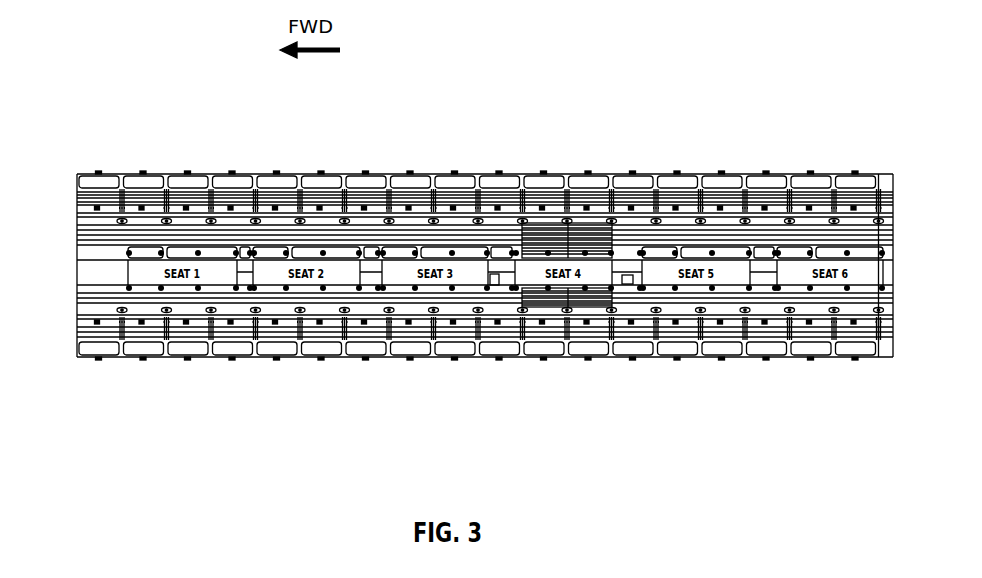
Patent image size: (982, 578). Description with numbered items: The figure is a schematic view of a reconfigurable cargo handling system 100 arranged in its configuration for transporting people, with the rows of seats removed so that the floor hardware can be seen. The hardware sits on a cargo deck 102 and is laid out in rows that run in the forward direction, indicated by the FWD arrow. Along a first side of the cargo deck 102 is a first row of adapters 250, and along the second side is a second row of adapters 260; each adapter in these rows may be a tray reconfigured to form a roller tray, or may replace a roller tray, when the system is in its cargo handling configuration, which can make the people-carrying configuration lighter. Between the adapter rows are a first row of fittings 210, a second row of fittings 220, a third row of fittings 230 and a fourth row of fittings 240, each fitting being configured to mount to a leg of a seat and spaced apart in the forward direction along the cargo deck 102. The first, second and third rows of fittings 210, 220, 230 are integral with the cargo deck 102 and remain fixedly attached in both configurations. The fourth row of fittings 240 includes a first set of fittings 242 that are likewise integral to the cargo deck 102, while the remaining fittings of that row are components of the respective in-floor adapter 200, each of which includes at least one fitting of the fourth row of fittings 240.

The reconfigurable cargo handling system 100 is at (173, 108).
The cargo deck 102 is at (98, 235).
The in-floor adapter 200 is at (278, 250).
The first row of fittings 210 is at (314, 207).
The second row of fittings 220 is at (309, 323).
The third row of fittings 230 is at (112, 288).
The fourth row of fittings 240 is at (105, 252).
The first set of fittings 242 is at (160, 250).
The first row of adapters 250 is at (294, 182).
The second row of adapters 260 is at (295, 356).